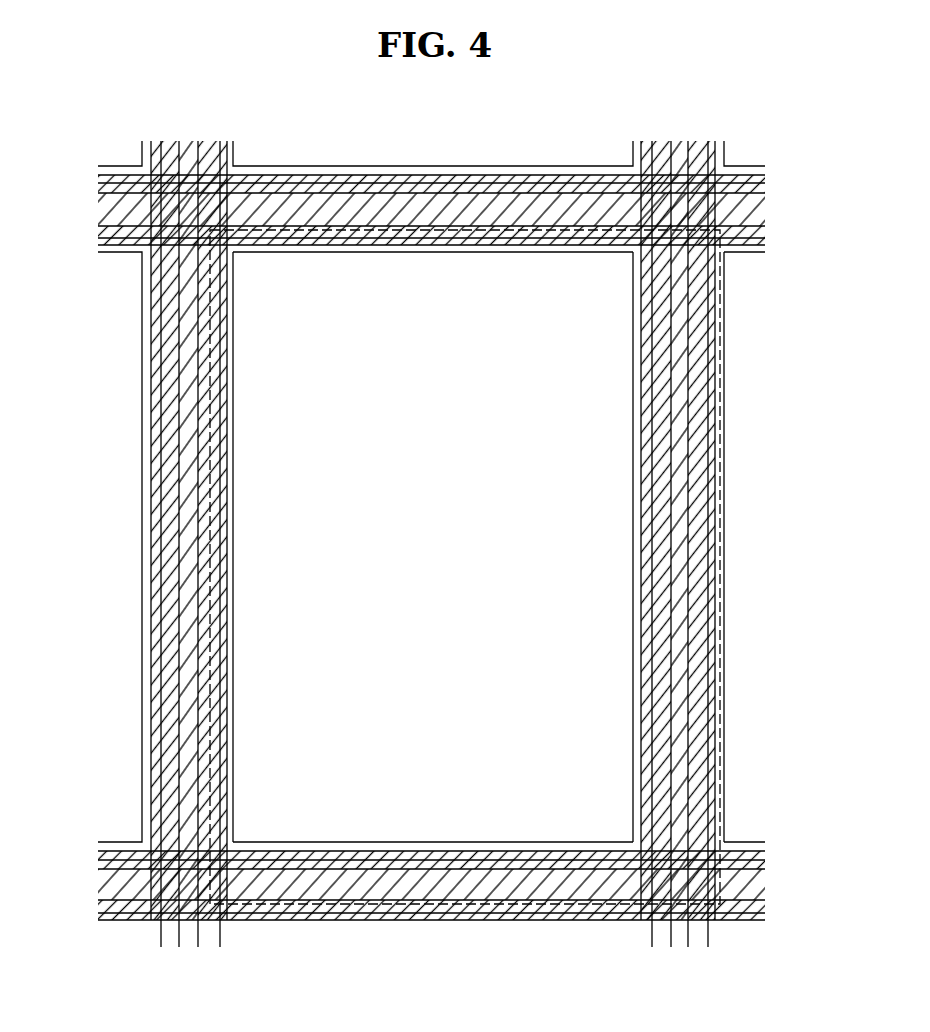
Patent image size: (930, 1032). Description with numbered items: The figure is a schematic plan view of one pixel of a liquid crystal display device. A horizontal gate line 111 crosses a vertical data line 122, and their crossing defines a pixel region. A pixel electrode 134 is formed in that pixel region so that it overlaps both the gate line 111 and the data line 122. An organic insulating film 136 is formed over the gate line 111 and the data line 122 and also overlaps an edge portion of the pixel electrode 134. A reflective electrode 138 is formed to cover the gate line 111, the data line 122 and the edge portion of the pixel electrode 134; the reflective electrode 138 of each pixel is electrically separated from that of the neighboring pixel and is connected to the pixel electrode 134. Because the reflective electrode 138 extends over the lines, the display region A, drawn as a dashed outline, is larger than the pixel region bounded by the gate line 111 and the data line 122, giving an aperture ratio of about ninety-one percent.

The gate line 111 is at (415, 917).
The data line 122 is at (158, 683).
The pixel electrode 134 is at (200, 577).
The organic insulating film 136 is at (233, 640).
The reflective electrode 138 is at (227, 725).
The display region A is at (722, 492).